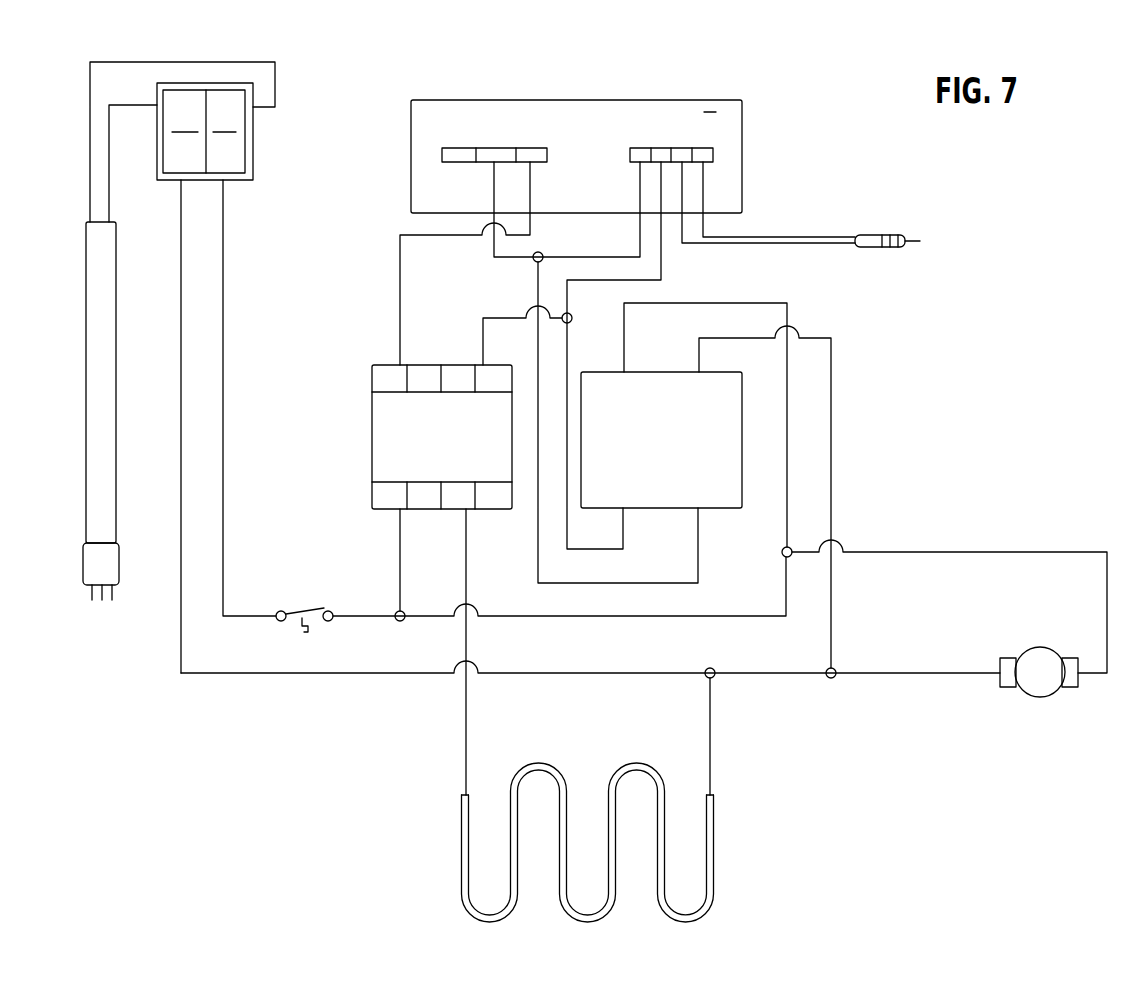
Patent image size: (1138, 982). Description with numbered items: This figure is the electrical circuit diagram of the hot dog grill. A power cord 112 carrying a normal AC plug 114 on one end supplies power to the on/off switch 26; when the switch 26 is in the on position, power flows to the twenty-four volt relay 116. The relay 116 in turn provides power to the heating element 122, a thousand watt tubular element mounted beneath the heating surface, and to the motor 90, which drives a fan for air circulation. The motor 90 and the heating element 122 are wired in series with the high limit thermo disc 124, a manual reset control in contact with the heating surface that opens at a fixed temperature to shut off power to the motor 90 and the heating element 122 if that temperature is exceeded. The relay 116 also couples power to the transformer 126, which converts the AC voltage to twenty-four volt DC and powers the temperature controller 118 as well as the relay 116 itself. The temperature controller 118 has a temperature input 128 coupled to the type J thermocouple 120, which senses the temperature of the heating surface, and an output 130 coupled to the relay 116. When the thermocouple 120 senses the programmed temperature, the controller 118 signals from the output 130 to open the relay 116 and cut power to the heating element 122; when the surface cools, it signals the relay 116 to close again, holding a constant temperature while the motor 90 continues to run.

The on/off switch 26 is at (253, 170).
The motor 90 is at (1008, 690).
The power cord 112 is at (113, 397).
The AC plug 114 is at (119, 572).
The relay 116 is at (385, 462).
The temperature controller 118 is at (708, 103).
The thermocouple 120 is at (870, 235).
The heating element 122 is at (716, 832).
The high limit thermo disc 124 is at (322, 608).
The transformer 126 is at (677, 508).
The temperature input 128 is at (713, 155).
The output 130 is at (547, 155).